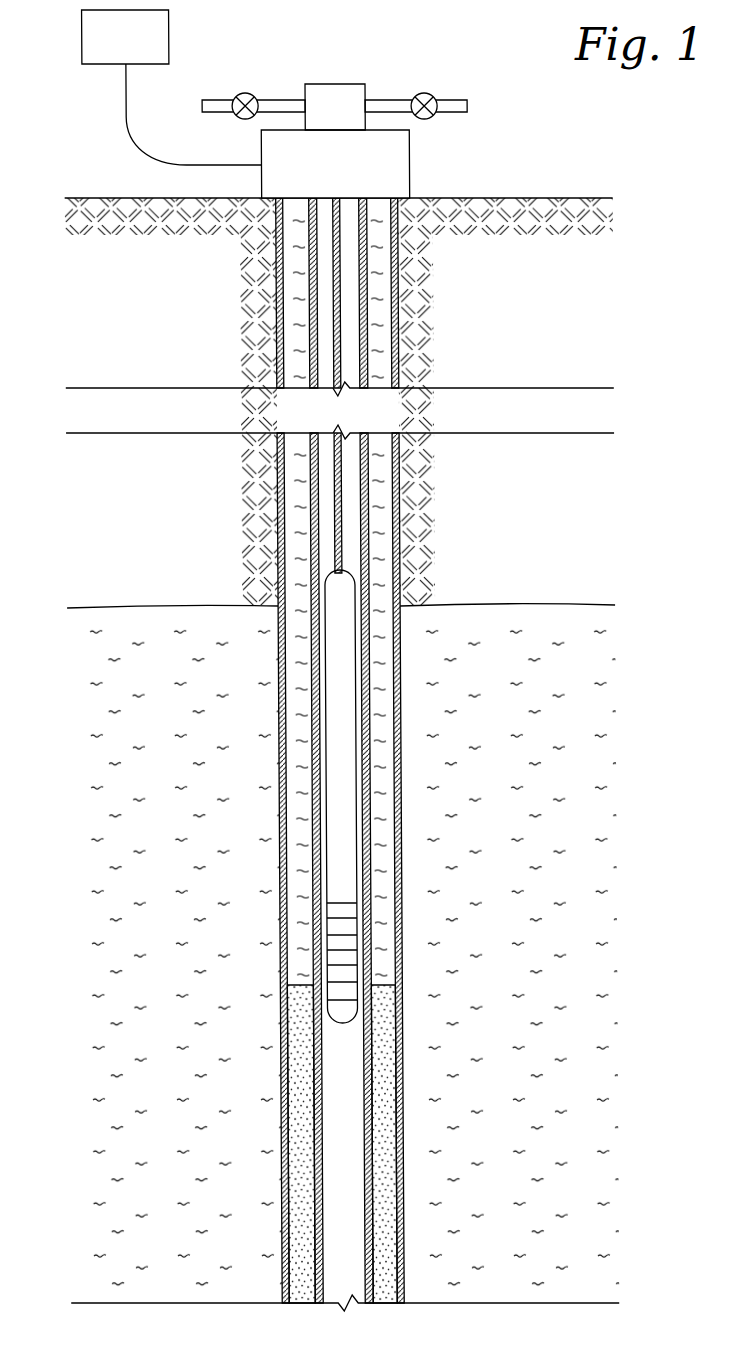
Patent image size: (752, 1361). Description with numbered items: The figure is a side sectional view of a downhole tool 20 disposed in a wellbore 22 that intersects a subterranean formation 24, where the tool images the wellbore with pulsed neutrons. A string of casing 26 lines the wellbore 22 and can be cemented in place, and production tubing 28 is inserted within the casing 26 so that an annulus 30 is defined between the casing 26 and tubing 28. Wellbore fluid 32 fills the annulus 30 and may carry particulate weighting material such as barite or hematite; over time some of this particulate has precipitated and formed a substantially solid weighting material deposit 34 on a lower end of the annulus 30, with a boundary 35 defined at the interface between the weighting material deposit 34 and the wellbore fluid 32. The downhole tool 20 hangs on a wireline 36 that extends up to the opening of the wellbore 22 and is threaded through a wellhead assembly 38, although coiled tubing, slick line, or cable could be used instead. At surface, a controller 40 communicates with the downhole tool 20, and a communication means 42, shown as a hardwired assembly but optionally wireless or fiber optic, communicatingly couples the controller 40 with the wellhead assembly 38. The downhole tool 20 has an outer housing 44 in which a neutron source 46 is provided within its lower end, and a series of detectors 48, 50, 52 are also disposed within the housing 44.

The downhole tool 20 is at (345, 796).
The wellbore 22 is at (280, 640).
The subterranean formation 24 is at (566, 788).
The casing 26 is at (280, 693).
The production tubing 28 is at (313, 746).
The annulus 30 is at (298, 781).
The wellbore fluid 32 is at (300, 831).
The weighting material deposit 34 is at (297, 1091).
The boundary 35 is at (380, 985).
The wireline 36 is at (333, 551).
The wellhead assembly 38 is at (410, 160).
The controller 40 is at (83, 37).
The communication means 42 is at (127, 98).
The outer housing 44 is at (325, 870).
The neutron source 46 is at (338, 1008).
The detector 48 is at (338, 977).
The detector 50 is at (338, 943).
The detector 52 is at (338, 912).